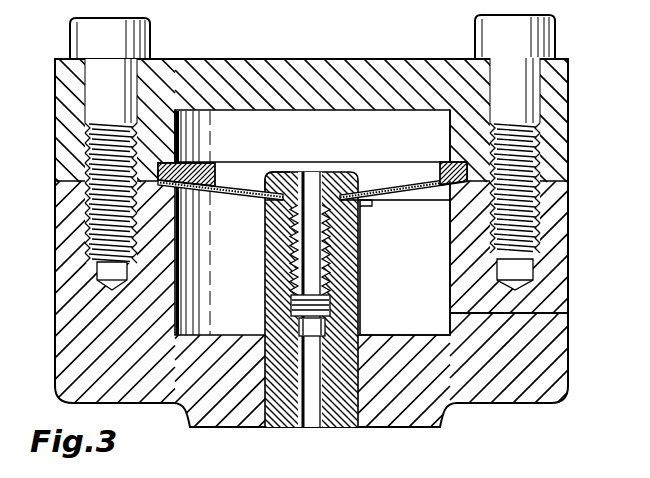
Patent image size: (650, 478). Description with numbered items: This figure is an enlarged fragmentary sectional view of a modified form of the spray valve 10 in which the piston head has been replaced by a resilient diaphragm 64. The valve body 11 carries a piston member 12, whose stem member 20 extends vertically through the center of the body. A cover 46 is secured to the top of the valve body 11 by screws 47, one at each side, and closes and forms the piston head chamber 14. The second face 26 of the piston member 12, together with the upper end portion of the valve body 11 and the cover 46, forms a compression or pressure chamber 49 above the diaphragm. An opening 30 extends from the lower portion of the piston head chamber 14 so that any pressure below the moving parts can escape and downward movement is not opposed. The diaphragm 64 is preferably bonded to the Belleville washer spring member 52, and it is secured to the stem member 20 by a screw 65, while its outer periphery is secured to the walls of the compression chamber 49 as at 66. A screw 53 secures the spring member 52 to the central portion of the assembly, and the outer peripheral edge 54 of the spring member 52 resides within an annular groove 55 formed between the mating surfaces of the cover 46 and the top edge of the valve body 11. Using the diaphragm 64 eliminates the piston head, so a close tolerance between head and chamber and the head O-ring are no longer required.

The spray valve 10 is at (325, 221).
The valve body 11 is at (55, 300).
The piston member 12 is at (266, 318).
The piston head chamber 14 is at (405, 267).
The stem member 20 is at (286, 283).
The second face 26 is at (311, 186).
The opening 30 is at (572, 314).
The cover 46 is at (270, 58).
The screws 47 is at (70, 37).
The compression chamber 49 is at (311, 222).
The spring member 52 is at (205, 188).
The screw 53 is at (361, 206).
The outer peripheral edge 54 is at (445, 187).
The annular groove 55 is at (462, 190).
The resilient diaphragm 64 is at (380, 193).
The screw 65 is at (282, 174).
The outer periphery securing location 66 is at (455, 172).